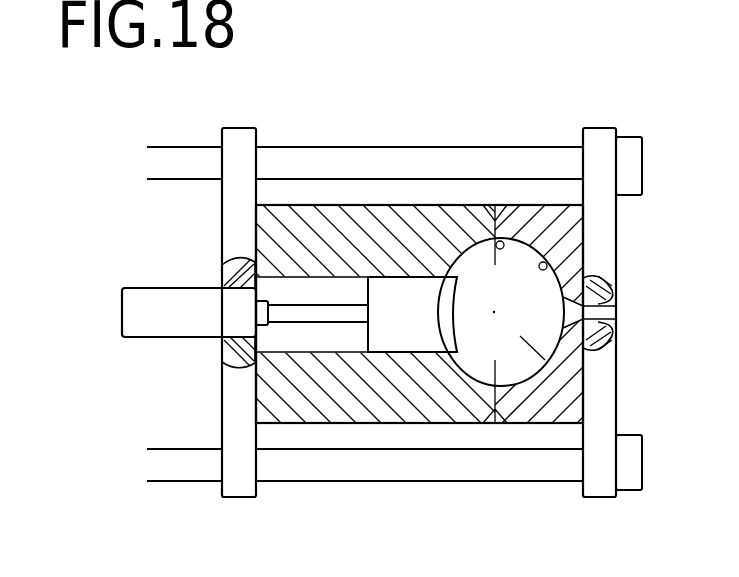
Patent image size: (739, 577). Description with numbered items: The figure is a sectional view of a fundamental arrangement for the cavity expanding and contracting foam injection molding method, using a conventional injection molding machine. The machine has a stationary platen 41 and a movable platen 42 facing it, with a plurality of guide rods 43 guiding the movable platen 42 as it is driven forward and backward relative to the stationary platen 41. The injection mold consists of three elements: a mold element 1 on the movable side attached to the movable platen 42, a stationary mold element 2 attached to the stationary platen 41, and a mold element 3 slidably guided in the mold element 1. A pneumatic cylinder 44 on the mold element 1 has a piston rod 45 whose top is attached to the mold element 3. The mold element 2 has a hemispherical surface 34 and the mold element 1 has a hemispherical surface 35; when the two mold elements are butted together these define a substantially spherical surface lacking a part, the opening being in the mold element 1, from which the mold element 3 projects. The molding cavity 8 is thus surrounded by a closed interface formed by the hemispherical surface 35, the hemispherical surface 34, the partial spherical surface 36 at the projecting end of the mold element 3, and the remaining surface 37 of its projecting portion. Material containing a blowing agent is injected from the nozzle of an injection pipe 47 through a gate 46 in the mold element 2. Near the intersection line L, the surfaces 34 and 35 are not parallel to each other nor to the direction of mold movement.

The mold element 1 is at (332, 417).
The mold element 2 is at (505, 415).
The mold element 3 is at (419, 314).
The molding cavity 8 is at (528, 348).
The hemispherical surface 34 is at (539, 265).
The hemispherical surface 35 is at (353, 390).
The partial spherical surface 36 is at (457, 314).
The remaining surface 37 is at (346, 240).
The stationary platen 41 is at (604, 140).
The movable platen 42 is at (238, 136).
The guide rods 43 is at (396, 158).
The pneumatic cylinder 44 is at (173, 302).
The piston rod 45 is at (302, 311).
The gate 46 is at (605, 353).
The injection pipe 47 is at (613, 303).
The intersection line L is at (500, 241).